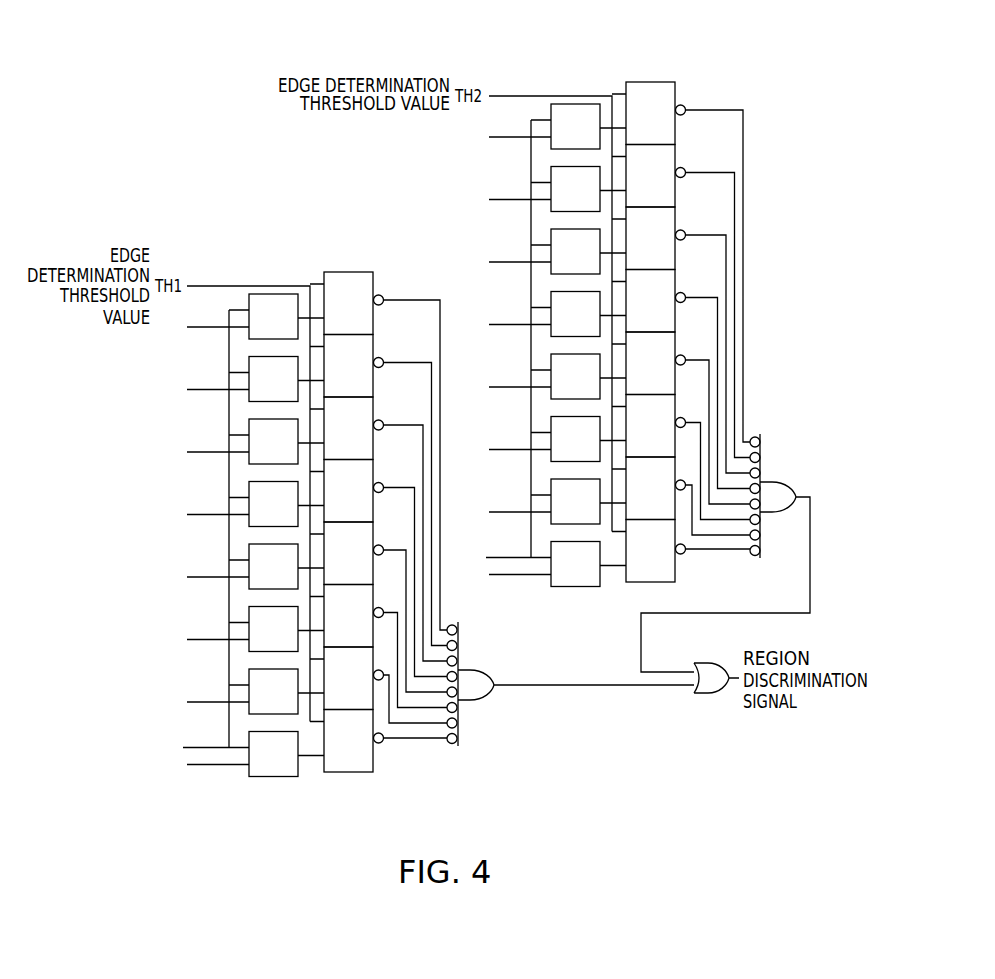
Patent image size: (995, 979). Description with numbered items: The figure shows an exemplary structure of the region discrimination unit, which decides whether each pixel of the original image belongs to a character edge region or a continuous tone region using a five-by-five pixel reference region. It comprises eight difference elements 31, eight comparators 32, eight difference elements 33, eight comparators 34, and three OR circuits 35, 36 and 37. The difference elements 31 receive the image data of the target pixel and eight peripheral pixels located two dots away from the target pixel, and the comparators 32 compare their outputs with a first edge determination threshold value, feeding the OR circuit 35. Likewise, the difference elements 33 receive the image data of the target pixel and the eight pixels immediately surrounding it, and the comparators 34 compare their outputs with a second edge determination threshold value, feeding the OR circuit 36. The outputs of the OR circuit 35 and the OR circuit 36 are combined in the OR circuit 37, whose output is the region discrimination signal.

The difference elements 31 is at (275, 268).
The comparators 32 is at (346, 788).
The difference elements 33 is at (570, 78).
The comparators 34 is at (633, 600).
The OR circuit 35 is at (476, 668).
The OR circuit 36 is at (774, 483).
The OR circuit 37 is at (709, 690).